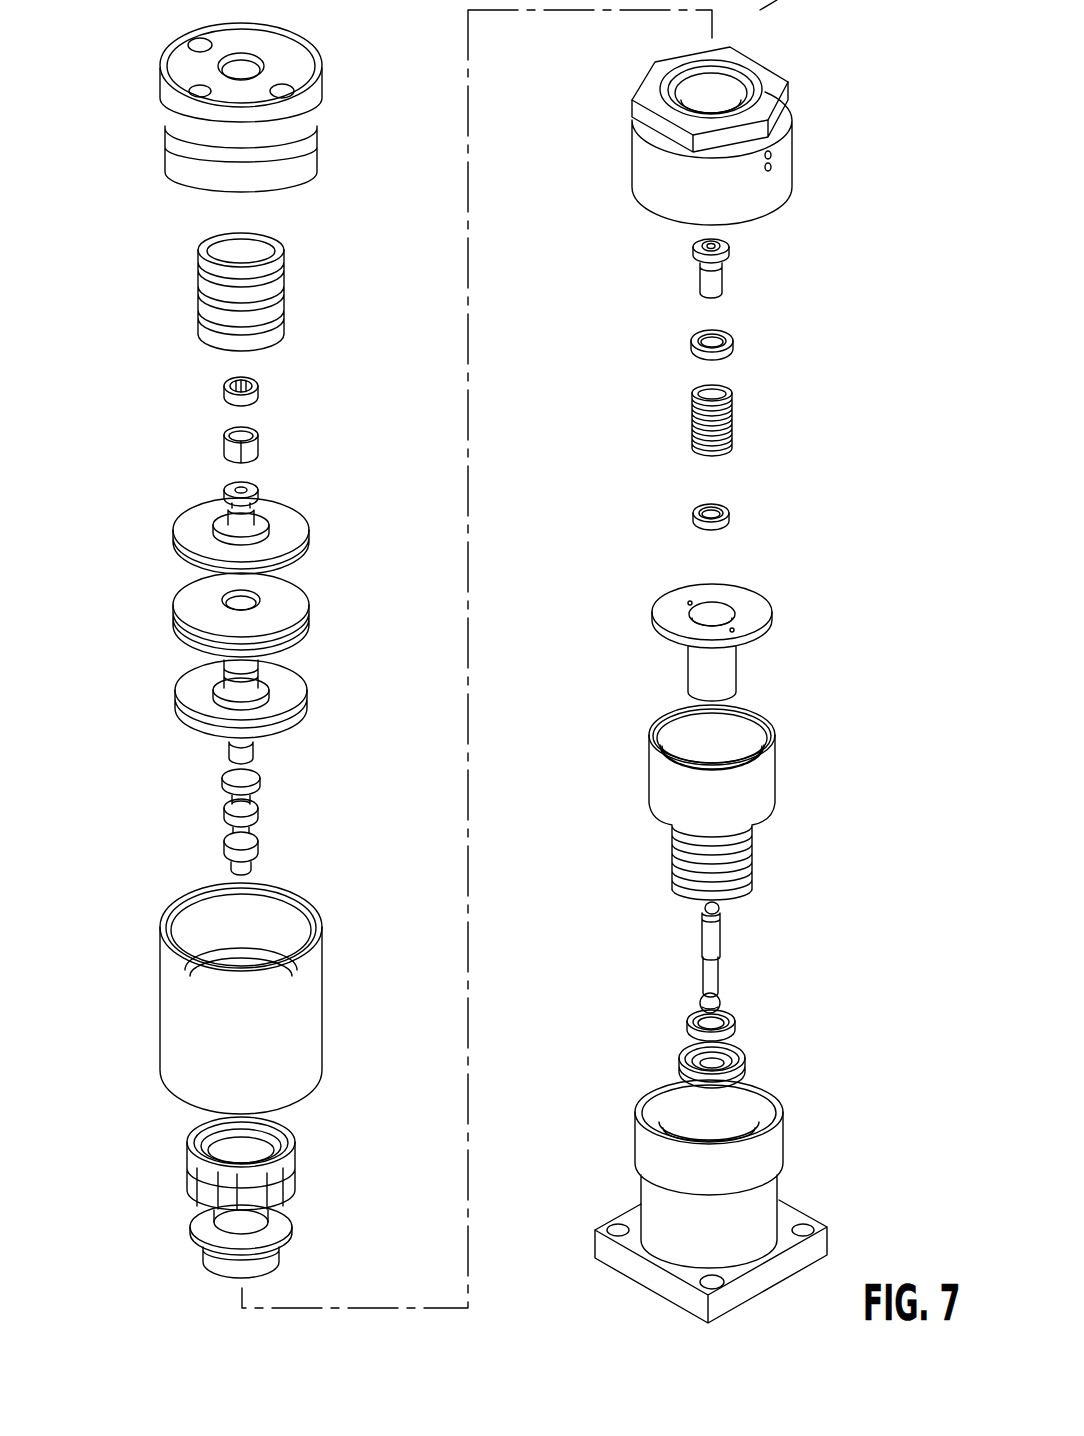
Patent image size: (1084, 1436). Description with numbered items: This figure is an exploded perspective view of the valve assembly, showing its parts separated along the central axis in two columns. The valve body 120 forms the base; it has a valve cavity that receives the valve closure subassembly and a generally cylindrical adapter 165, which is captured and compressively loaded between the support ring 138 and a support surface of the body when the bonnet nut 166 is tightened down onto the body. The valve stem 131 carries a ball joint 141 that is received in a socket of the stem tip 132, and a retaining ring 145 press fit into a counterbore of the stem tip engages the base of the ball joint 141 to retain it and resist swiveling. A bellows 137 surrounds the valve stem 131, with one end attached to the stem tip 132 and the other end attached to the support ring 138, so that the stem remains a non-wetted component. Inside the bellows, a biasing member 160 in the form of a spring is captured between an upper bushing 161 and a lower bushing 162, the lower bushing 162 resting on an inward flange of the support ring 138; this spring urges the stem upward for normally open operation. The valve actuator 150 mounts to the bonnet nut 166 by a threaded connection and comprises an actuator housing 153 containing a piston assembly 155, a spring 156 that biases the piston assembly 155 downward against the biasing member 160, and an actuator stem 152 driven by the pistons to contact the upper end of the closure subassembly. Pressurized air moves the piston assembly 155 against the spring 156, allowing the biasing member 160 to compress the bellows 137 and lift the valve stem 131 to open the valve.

The valve actuator 150 is at (130, 0).
The spring 156 is at (273, 286).
The piston assembly 155 is at (334, 578).
The actuator stem 152 is at (262, 837).
The actuator housing 153 is at (300, 1005).
The bonnet nut 166 is at (781, 133).
The lower bushing 162 is at (762, 254).
The upper bushing 161 is at (764, 326).
The biasing member 160 is at (754, 406).
The support ring 138 is at (801, 596).
The adapter 165 is at (803, 748).
The bellows 137 is at (787, 840).
The valve stem 131 is at (758, 936).
The ball joint 141 is at (720, 997).
The retaining ring 145 is at (767, 1018).
The stem tip 132 is at (747, 1067).
The valve body 120 is at (775, 1197).